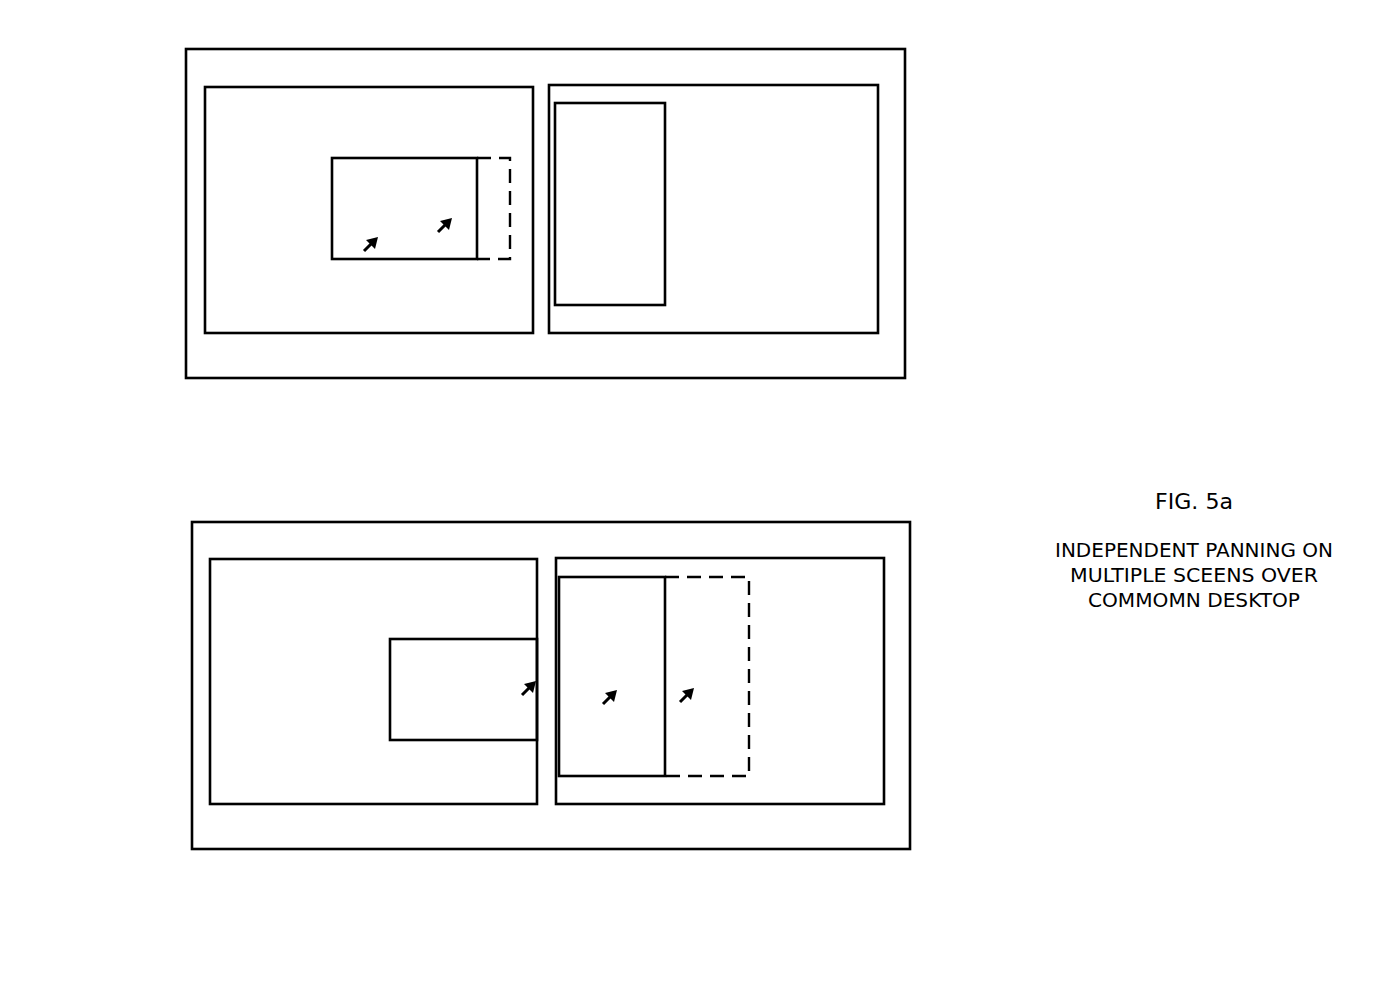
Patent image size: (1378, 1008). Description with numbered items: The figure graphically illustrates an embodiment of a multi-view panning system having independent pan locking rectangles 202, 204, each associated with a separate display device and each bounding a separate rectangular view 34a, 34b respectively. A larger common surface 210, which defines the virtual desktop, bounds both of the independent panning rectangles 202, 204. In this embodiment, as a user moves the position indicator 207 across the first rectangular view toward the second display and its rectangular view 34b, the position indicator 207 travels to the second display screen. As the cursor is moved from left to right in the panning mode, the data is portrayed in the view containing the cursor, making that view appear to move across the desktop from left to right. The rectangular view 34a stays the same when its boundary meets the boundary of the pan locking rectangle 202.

The pan locking rectangle 202 is at (372, 335).
The pan locking rectangle 204 is at (873, 158).
The common surface 210 is at (908, 285).
The rectangular view 34a is at (332, 210).
The rectangular view 34b is at (664, 232).
The position indicator 207 is at (437, 242).